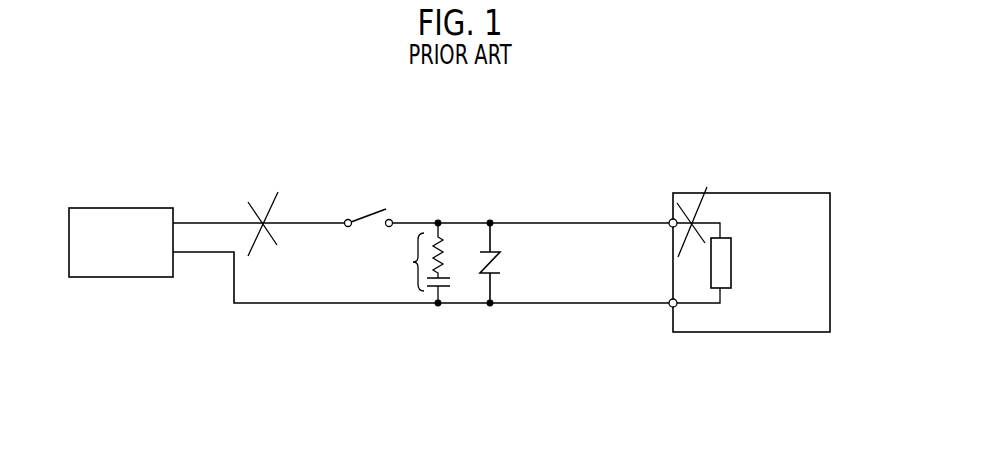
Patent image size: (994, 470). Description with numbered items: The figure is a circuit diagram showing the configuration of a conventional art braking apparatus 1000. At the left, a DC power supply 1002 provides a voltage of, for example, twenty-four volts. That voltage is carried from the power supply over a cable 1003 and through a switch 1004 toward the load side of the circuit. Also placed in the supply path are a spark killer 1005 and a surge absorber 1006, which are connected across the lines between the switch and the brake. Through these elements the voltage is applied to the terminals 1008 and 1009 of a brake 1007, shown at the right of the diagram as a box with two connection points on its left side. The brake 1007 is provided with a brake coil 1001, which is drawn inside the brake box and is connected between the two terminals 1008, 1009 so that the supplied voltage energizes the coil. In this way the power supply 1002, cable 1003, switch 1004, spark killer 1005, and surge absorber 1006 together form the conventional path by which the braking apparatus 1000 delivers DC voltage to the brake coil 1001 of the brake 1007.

The braking apparatus 1000 is at (532, 153).
The brake coil 1001 is at (731, 288).
The DC power supply 1002 is at (120, 207).
The cable 1003 is at (193, 220).
The switch 1004 is at (393, 212).
The spark killer 1005 is at (410, 262).
The surge absorber 1006 is at (503, 263).
The brake 1007 is at (830, 210).
The terminal 1008 is at (668, 221).
The terminal 1009 is at (669, 307).